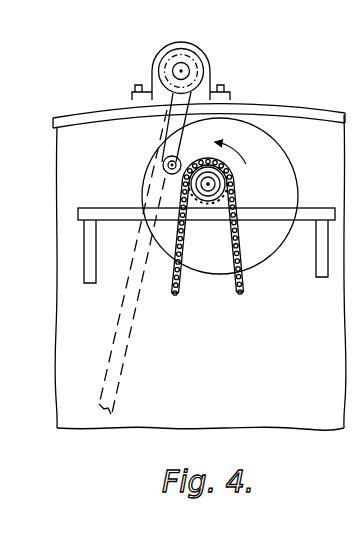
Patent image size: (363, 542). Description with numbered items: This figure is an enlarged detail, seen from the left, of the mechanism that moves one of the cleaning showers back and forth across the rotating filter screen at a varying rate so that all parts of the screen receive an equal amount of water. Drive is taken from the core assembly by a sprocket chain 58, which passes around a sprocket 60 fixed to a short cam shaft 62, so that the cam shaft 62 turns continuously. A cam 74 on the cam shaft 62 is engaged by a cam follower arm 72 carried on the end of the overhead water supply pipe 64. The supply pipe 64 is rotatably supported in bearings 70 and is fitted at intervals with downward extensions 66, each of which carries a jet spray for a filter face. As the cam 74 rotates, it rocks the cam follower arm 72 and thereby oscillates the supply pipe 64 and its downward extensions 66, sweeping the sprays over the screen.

The sprocket chain 58 is at (178, 288).
The sprocket 60 is at (217, 214).
The cam shaft 62 is at (211, 185).
The water supply pipe 64 is at (190, 67).
The downward extension 66 is at (117, 325).
The bearing 70 is at (153, 62).
The cam follower arm 72 is at (168, 128).
The cam 74 is at (297, 165).